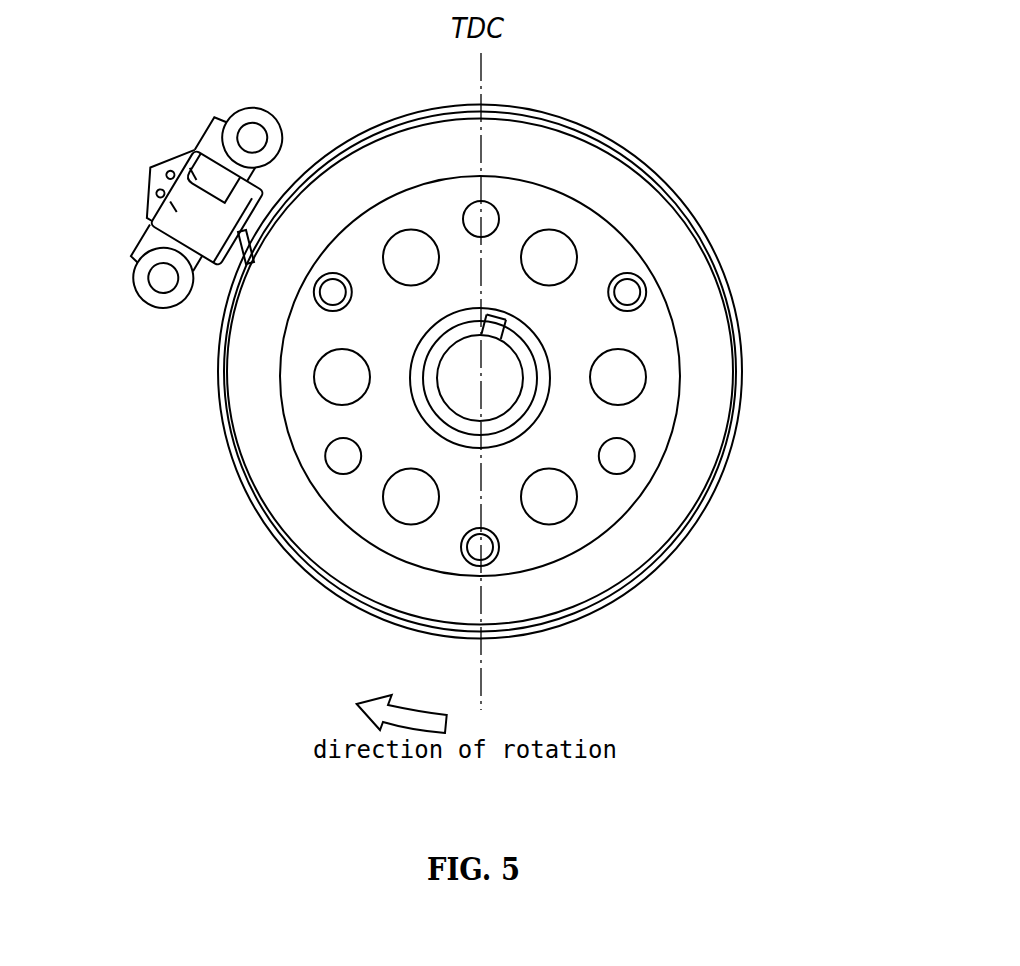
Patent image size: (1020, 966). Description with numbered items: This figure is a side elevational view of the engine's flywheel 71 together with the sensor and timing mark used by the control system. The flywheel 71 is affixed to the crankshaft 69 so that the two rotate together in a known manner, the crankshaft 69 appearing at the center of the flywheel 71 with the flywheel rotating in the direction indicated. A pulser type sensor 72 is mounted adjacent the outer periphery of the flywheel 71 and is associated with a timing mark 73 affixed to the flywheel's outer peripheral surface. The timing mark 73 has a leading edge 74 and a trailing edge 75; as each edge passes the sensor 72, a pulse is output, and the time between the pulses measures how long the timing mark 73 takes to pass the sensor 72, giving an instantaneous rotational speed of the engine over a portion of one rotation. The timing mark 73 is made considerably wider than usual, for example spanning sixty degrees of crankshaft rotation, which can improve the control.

The crankshaft 69 is at (523, 368).
The flywheel 71 is at (593, 617).
The pulser type sensor 72 is at (148, 213).
The timing mark 73 is at (400, 113).
The leading edge 74 is at (482, 103).
The trailing edge 75 is at (247, 250).